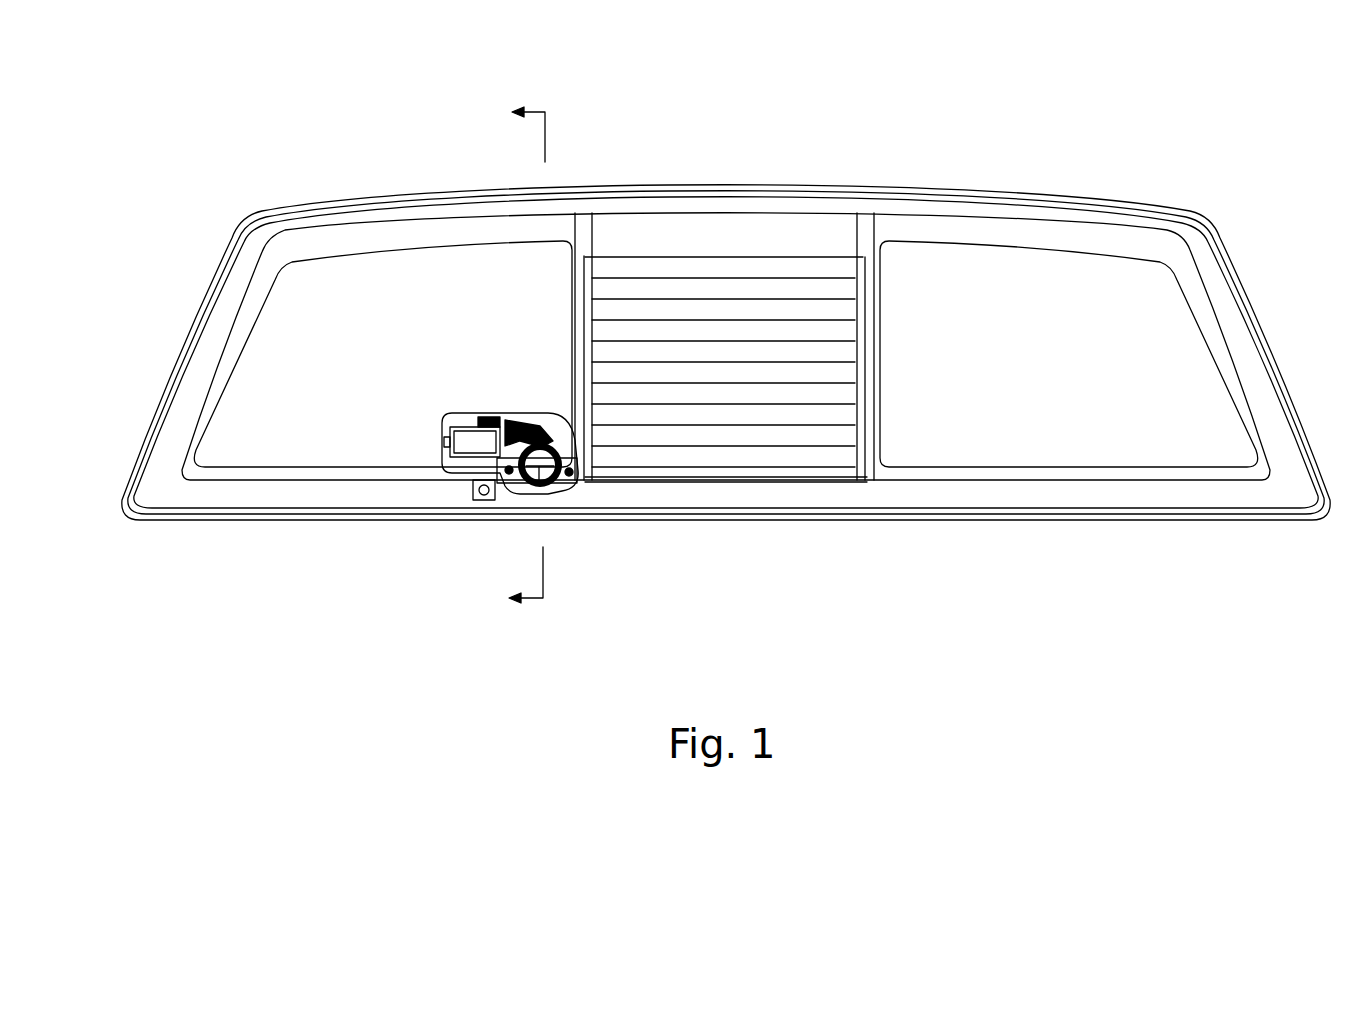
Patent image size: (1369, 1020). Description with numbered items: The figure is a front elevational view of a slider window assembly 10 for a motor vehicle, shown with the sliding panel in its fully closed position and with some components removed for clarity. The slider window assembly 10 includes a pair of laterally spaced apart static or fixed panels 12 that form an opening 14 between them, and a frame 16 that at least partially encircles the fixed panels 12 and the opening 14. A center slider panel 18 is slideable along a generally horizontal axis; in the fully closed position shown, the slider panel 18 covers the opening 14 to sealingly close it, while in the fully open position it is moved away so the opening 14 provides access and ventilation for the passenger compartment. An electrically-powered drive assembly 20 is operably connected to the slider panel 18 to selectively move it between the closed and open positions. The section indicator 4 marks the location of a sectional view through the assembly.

The slider window assembly 10 is at (713, 609).
The fixed panels 12 is at (388, 272).
The opening 14 is at (593, 238).
The frame 16 is at (780, 526).
The slider panel 18 is at (795, 233).
The drive assembly 20 is at (470, 455).
The section line 4- 4 is at (519, 355).